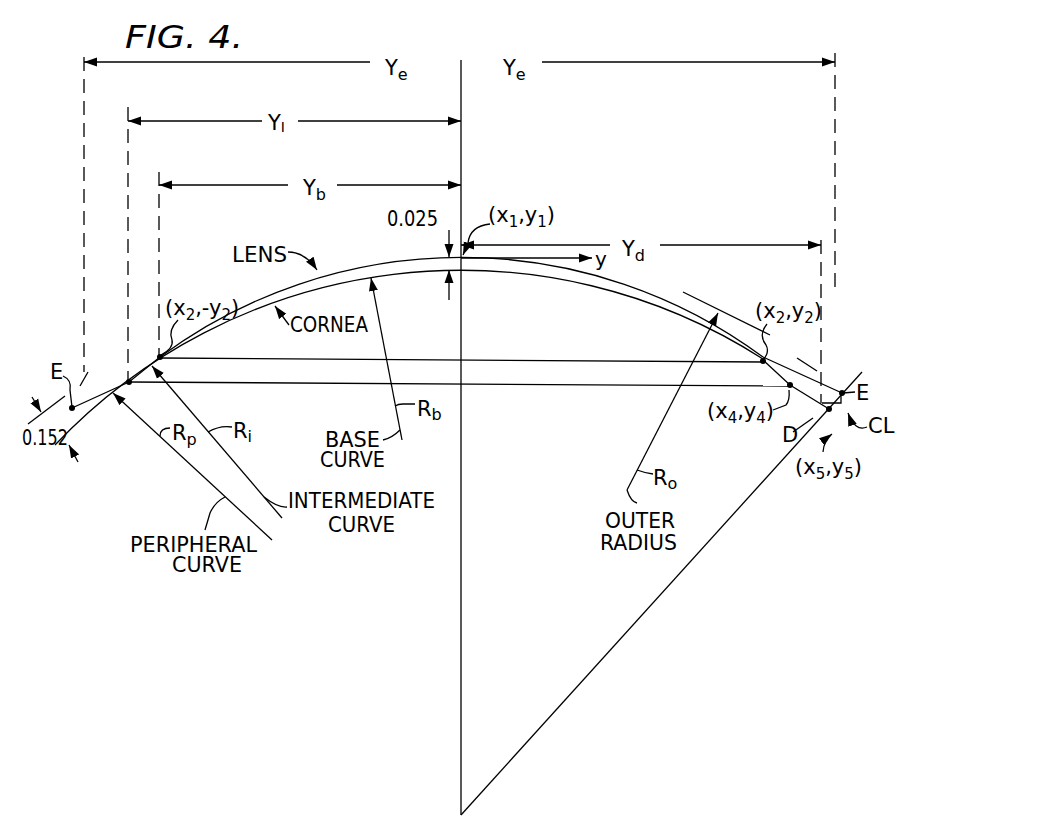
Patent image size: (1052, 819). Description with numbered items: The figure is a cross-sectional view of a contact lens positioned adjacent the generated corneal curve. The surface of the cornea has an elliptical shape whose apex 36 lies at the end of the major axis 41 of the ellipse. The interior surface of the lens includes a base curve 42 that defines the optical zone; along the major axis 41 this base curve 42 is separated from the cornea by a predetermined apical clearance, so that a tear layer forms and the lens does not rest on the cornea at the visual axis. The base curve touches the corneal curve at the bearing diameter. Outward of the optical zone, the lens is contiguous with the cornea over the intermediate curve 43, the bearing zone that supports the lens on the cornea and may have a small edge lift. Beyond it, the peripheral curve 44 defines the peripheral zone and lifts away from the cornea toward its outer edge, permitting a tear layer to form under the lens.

The apex 36 is at (462, 270).
The major axis 41 is at (461, 516).
The base curve 42 is at (628, 285).
The intermediate curve 43 is at (777, 373).
The peripheral curve 44 is at (822, 382).